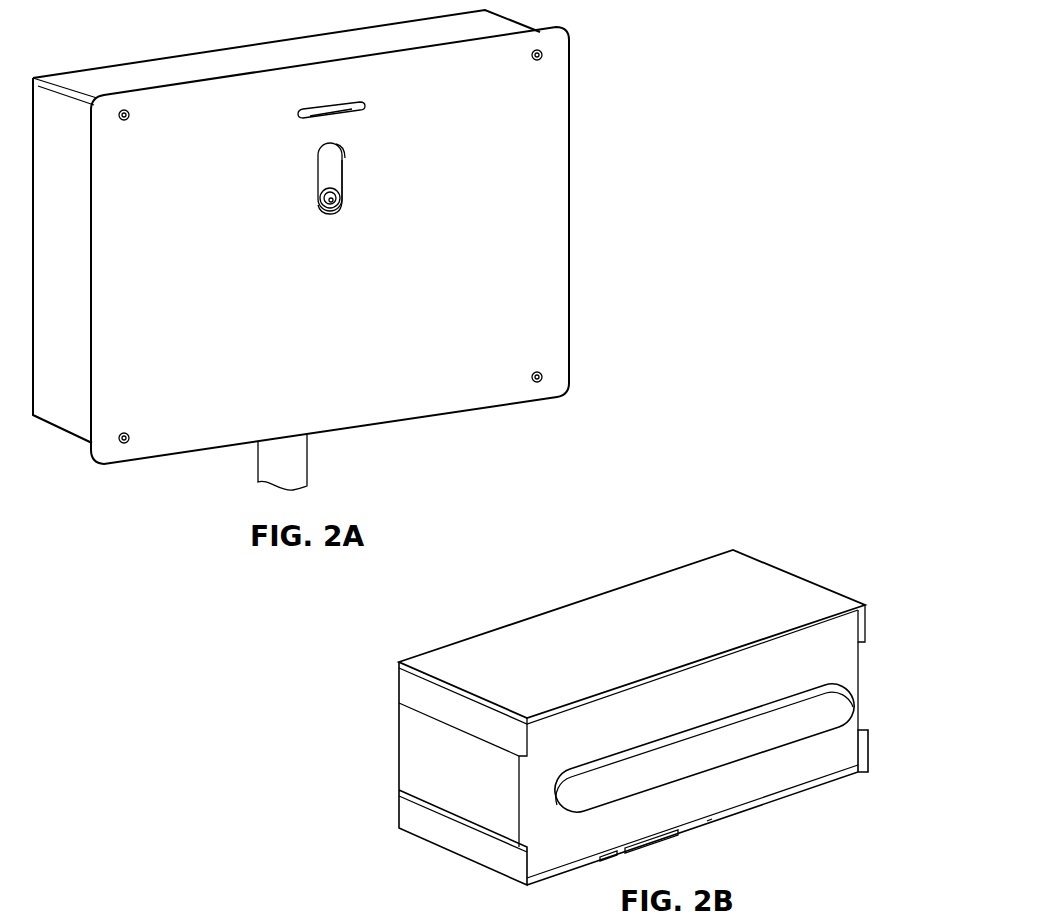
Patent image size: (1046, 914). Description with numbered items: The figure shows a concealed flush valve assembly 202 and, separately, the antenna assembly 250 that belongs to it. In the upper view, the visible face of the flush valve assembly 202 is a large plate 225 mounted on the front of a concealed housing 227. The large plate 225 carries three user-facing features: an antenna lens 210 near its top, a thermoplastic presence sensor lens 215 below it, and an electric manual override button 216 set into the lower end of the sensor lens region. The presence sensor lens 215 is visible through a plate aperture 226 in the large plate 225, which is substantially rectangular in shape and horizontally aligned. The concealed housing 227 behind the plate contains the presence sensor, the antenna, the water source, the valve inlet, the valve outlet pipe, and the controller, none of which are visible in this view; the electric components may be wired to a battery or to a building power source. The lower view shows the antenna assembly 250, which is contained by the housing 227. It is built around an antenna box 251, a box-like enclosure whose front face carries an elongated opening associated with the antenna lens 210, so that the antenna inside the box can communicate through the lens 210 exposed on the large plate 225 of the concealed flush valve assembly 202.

In FIG. 2A, the concealed flush valve assembly 202 is at (562, 17).
In FIG. 2A, the antenna lens 210 is at (312, 115).
In FIG. 2B, the antenna lens 210 is at (557, 782).
In FIG. 2A, the thermoplastic presence sensor lens 215 is at (328, 168).
In FIG. 2A, the electric manual override button 216 is at (328, 213).
In FIG. 2A, the large plate 225 is at (538, 188).
In FIG. 2A, the plate aperture 226 is at (357, 118).
In FIG. 2A, the concealed housing 227 is at (100, 80).
In FIG. 2B, the antenna assembly 250 is at (688, 527).
In FIG. 2B, the antenna box 251 is at (413, 670).